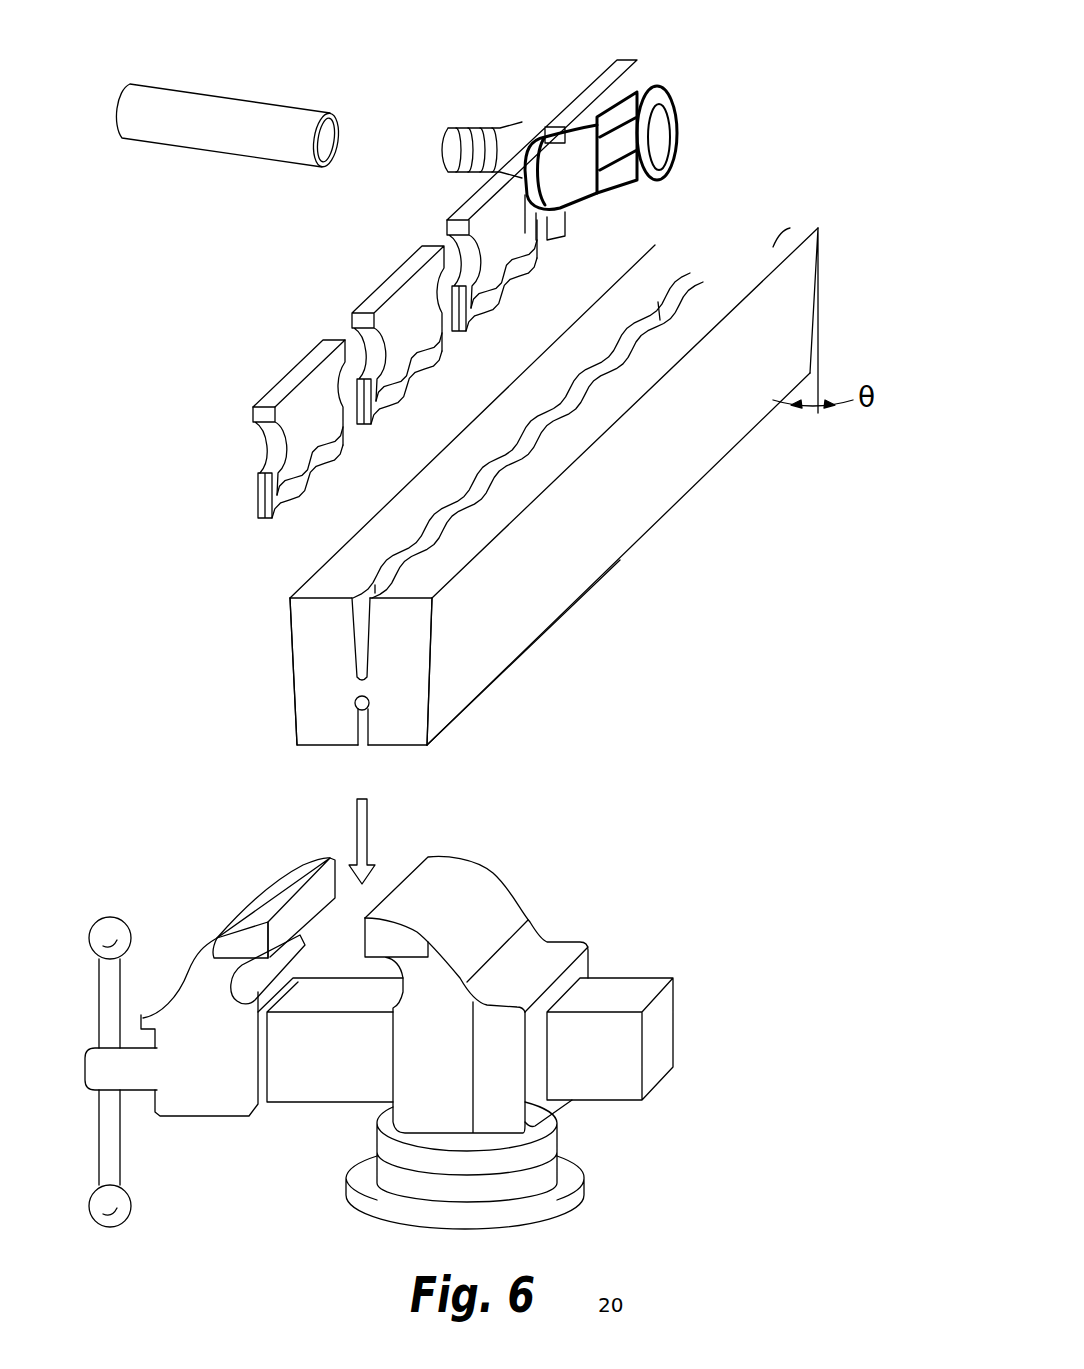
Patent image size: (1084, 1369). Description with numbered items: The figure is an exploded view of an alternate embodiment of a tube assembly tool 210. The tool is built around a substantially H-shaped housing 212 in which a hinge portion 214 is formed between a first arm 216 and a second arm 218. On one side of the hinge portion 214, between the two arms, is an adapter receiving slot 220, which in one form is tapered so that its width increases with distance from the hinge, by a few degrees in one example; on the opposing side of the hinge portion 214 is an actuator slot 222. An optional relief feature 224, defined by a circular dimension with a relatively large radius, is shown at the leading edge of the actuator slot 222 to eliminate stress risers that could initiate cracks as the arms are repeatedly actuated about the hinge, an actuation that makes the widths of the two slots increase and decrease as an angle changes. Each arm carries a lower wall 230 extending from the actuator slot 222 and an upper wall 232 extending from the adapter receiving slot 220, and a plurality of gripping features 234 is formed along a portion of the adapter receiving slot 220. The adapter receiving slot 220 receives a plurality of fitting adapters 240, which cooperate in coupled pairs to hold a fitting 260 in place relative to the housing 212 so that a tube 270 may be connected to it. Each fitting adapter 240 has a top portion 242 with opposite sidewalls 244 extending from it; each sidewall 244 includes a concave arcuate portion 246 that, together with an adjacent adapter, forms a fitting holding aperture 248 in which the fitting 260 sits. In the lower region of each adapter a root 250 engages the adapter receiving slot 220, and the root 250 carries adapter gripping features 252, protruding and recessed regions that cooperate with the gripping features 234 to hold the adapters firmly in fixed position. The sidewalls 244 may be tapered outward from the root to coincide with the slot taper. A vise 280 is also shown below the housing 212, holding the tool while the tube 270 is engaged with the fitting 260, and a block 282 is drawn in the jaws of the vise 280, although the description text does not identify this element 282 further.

The tube assembly tool 210 is at (824, 186).
The H-shaped housing 212 is at (653, 483).
The hinge portion 214 is at (362, 688).
The first arm 216 is at (313, 688).
The second arm 218 is at (403, 667).
The adapter receiving slot 220 is at (357, 642).
The actuator slot 222 is at (360, 745).
The relief feature 224 is at (353, 705).
The lower wall 230 is at (600, 577).
The upper wall 232 is at (776, 227).
The gripping features 234 is at (563, 400).
The fitting adapter 240 is at (273, 357).
The top portion 242 is at (305, 367).
The sidewall 244 is at (260, 497).
The concave arcuate portion 246 is at (370, 348).
The fitting holding aperture 248 is at (516, 116).
The root 250 is at (307, 448).
The adapter gripping features 252 is at (483, 307).
The fitting 260 is at (535, 132).
The tube 270 is at (210, 140).
The vise 280 is at (547, 950).
The spacer block 282 is at (310, 898).